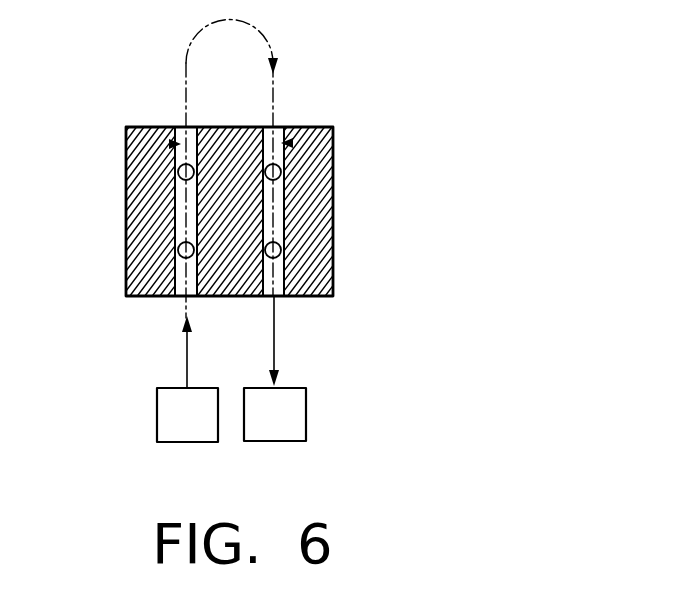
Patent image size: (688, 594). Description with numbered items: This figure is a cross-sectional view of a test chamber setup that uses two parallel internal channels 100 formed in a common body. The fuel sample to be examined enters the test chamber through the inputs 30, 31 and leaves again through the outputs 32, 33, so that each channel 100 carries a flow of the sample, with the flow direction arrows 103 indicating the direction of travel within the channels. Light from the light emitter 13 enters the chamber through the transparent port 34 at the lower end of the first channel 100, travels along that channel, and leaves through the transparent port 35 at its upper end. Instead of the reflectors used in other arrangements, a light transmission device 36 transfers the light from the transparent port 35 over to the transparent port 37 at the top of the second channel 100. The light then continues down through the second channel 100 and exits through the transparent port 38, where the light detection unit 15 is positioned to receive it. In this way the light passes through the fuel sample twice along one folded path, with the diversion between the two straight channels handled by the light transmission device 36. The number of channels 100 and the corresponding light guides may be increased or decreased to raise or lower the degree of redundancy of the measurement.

The light emitter 13 is at (189, 443).
The light detection unit 15 is at (273, 443).
The input 30 is at (178, 172).
The input 31 is at (281, 172).
The output 32 is at (178, 251).
The output 33 is at (281, 250).
The transparent port 34 is at (182, 298).
The transparent port 35 is at (185, 127).
The light transmission device 36 is at (212, 26).
The transparent port 37 is at (274, 127).
The transparent port 38 is at (278, 298).
The internal channel 100 is at (157, 214).
The fluid flow direction 103 is at (174, 145).